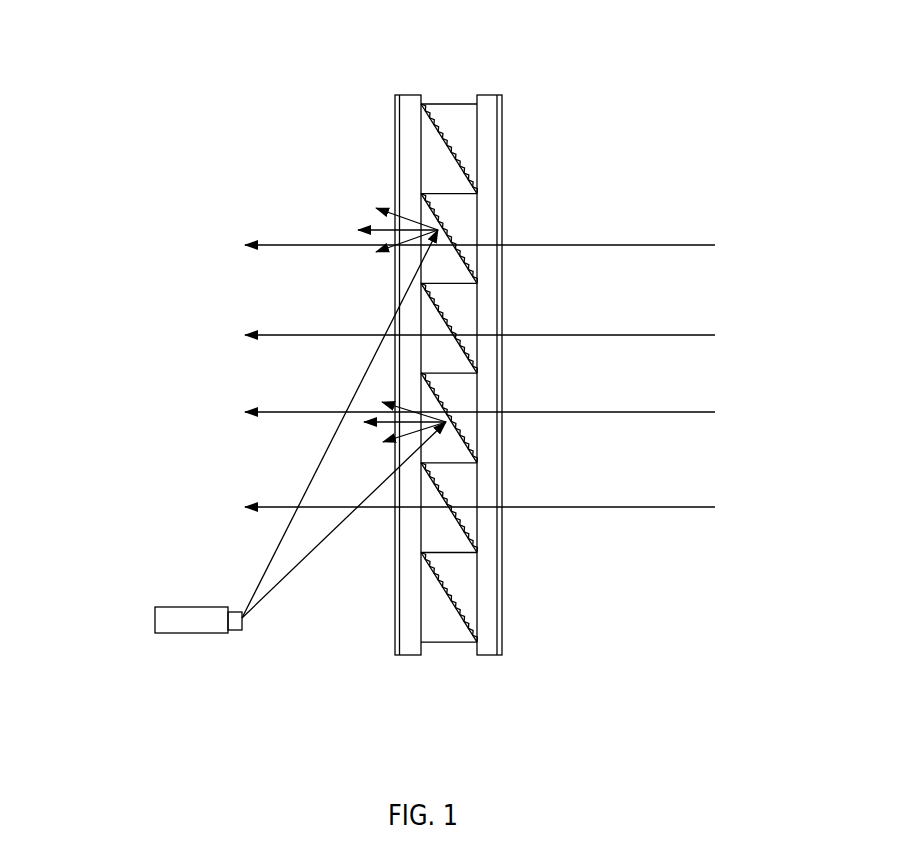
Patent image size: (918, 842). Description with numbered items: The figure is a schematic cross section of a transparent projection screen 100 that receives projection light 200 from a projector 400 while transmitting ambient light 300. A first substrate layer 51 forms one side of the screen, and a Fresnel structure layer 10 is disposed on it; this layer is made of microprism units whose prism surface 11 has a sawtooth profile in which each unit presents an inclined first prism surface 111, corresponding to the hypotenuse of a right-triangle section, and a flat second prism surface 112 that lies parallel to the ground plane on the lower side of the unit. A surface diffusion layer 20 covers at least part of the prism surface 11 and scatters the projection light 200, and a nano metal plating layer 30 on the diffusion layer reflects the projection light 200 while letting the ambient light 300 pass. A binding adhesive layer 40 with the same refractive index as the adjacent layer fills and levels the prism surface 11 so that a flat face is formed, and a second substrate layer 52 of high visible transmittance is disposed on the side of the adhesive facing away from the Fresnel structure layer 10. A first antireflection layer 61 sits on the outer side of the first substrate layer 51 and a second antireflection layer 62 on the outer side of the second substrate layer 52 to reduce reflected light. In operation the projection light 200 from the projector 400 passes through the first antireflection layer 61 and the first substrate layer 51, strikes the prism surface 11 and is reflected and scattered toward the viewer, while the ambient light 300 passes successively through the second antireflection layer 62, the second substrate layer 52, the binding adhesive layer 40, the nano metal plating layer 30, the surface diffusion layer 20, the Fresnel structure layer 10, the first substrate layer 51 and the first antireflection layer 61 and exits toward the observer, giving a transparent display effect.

The transparent projection screen 100 is at (366, 60).
The Fresnel structure layer 10 is at (432, 183).
The prism surface 11 is at (588, 288).
The first prism surface 111 is at (468, 302).
The second prism surface 112 is at (470, 366).
The surface diffusion layer 20 is at (467, 178).
The nano metal plating layer 30 is at (452, 150).
The binding adhesive layer 40 is at (457, 120).
The first substrate layer 51 is at (410, 580).
The second substrate layer 52 is at (487, 565).
The first antireflection layer 61 is at (397, 637).
The second antireflection layer 62 is at (502, 637).
The projection light 200 is at (310, 480).
The ambient light 300 is at (605, 245).
The projector 400 is at (187, 618).